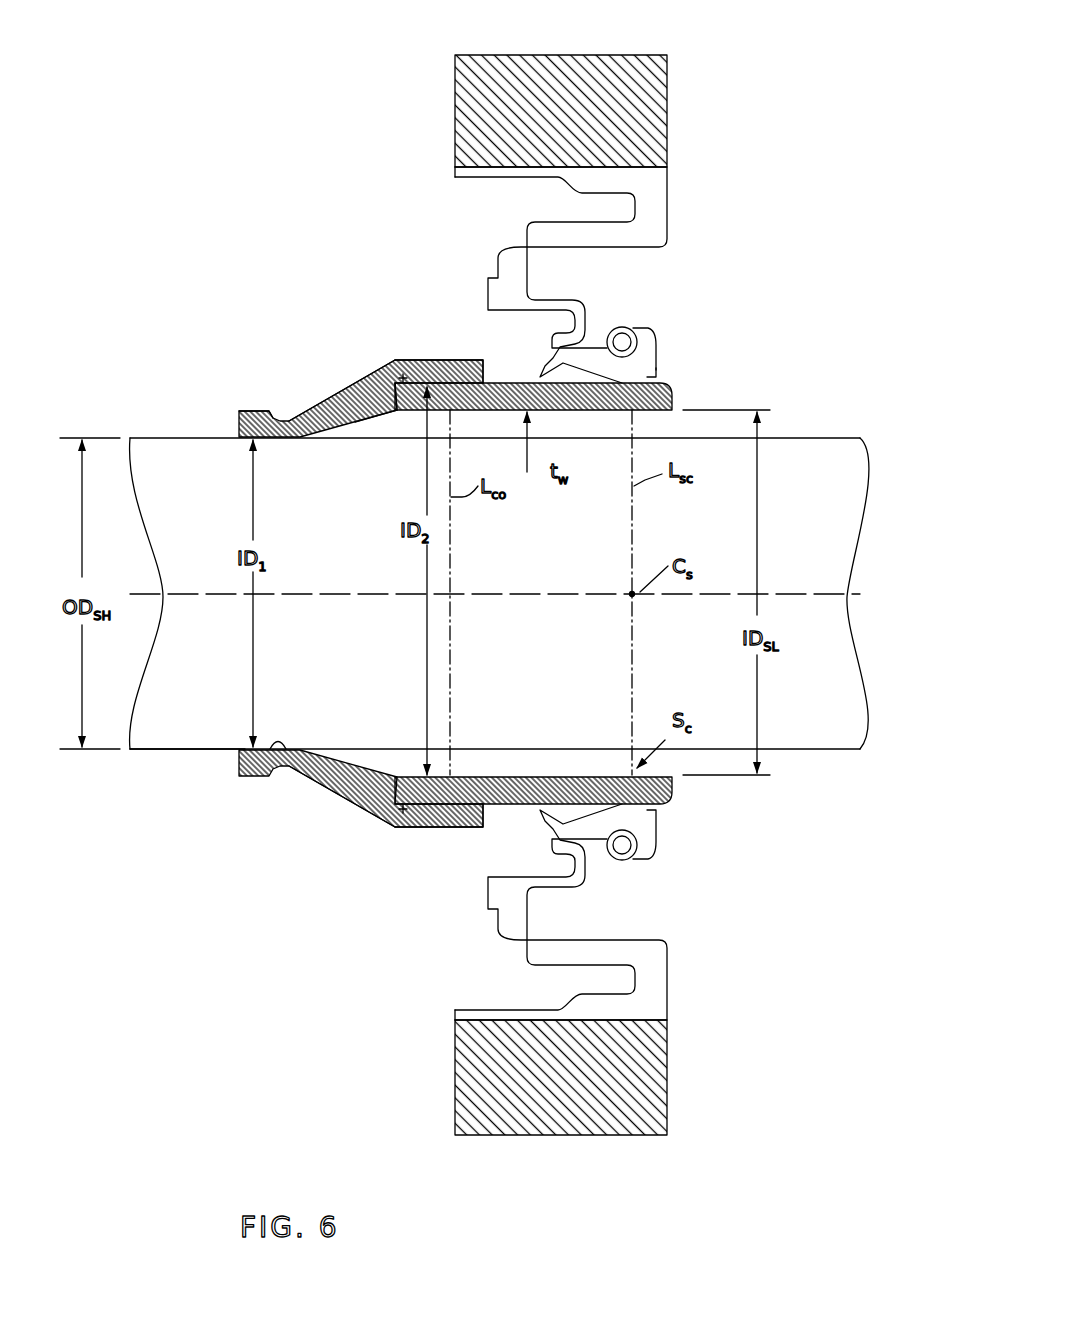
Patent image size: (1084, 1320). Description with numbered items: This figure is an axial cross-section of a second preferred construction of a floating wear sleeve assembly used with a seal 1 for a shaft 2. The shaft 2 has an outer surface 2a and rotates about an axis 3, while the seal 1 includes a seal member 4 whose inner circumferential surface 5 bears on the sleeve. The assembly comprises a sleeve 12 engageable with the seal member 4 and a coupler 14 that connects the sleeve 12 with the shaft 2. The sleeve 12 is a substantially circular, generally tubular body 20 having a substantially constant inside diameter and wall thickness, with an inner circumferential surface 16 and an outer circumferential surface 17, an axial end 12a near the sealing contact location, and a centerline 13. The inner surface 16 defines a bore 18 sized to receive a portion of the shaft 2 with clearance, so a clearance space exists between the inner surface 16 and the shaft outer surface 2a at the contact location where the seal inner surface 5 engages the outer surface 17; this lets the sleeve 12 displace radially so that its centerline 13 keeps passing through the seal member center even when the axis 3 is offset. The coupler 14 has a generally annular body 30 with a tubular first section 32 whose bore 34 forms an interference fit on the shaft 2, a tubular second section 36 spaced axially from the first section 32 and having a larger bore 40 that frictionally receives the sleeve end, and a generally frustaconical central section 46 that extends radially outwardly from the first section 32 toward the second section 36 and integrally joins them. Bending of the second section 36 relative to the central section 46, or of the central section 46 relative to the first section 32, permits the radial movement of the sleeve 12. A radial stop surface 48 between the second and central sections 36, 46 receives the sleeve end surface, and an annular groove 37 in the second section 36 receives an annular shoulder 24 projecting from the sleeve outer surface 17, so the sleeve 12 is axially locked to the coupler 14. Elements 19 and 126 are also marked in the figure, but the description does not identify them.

The seal 1 is at (408, 268).
The shaft 2 is at (643, 775).
The outer surface 2a is at (178, 752).
The axis 3 is at (534, 641).
The centerline 13 is at (853, 598).
The seal member 4 is at (660, 340).
The inner circumferential surface 5 is at (630, 378).
The sleeve 12 is at (578, 775).
The axial end 12a is at (678, 392).
The coupler 14 is at (283, 333).
The inner circumferential surface 16 is at (533, 771).
The outer circumferential surface 17 is at (527, 382).
The bore 18 is at (517, 781).
The contact surface 19 is at (393, 392).
The tubular body 20 is at (594, 808).
The annular shoulder 24 is at (388, 829).
The annular body 30 is at (312, 796).
The first section 32 is at (251, 408).
The bore 34 is at (282, 753).
The second section 36 is at (461, 357).
The annular groove 37 is at (413, 380).
The bore 40 is at (470, 806).
The central section 46 is at (336, 396).
The stop surface 48 is at (410, 412).
The conical portion 126 is at (362, 778).